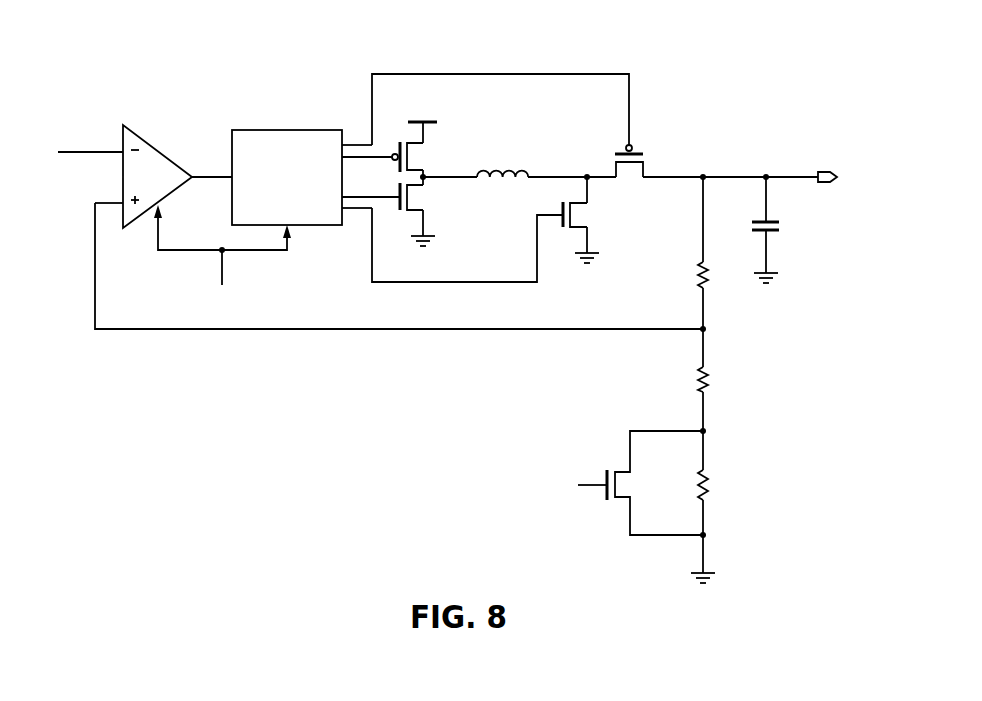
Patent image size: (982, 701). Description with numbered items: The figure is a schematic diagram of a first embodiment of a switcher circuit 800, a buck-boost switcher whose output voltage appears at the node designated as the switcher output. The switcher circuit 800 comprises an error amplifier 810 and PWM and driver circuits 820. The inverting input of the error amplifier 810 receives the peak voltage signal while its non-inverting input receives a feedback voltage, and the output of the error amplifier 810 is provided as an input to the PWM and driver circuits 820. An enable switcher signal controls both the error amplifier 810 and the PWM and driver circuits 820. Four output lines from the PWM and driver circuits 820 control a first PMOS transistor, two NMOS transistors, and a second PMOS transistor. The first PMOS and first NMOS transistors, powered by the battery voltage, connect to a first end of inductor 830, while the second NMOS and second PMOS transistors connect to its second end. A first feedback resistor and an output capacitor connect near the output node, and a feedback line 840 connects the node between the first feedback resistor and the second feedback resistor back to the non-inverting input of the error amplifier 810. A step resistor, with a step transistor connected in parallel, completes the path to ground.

The switcher circuit 800 is at (770, 47).
The error amplifier 810 is at (160, 146).
The PWM and driver circuits 820 is at (300, 130).
The inductor 830 is at (507, 172).
The feedback line 840 is at (297, 331).